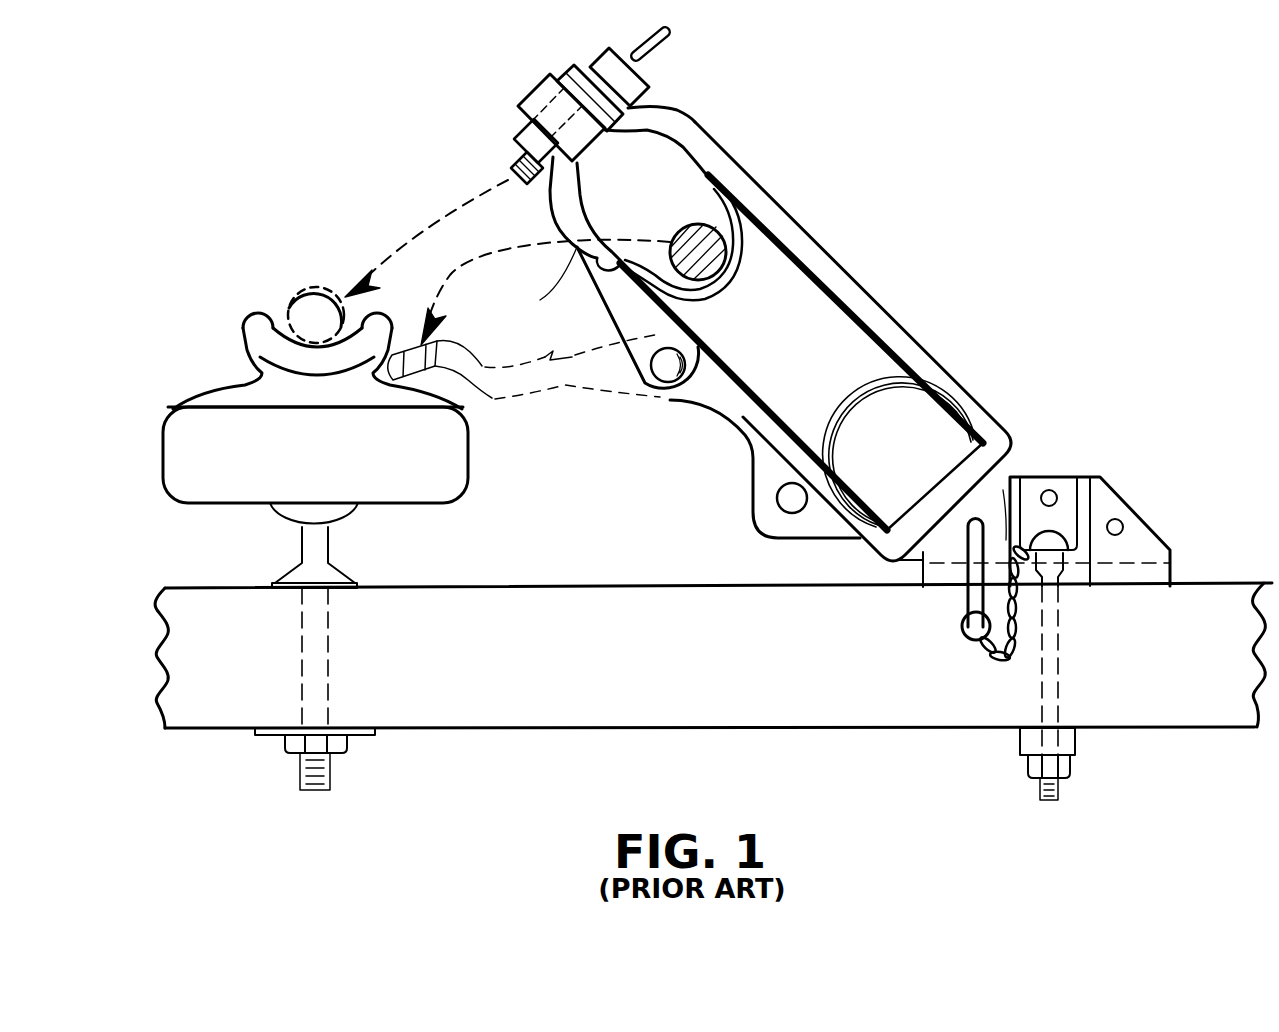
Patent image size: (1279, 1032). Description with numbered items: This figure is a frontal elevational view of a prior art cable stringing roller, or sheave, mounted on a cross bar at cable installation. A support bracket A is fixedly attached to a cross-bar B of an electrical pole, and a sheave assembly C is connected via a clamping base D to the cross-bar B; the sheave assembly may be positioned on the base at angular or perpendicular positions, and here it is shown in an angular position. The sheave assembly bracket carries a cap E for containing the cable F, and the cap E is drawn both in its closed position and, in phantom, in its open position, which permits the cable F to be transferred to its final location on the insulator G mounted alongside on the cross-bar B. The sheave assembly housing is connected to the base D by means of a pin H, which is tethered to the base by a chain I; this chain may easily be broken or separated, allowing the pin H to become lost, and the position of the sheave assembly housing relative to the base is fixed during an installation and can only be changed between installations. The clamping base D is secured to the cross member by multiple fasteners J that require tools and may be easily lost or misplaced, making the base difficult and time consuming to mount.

The support bracket A is at (748, 416).
The cross-bar B is at (498, 668).
The sheave assembly C is at (782, 320).
The clamping base D is at (1133, 547).
The cap E is at (572, 363).
The cable F is at (293, 298).
The insulator G is at (203, 437).
The pin H is at (878, 308).
The chain I is at (988, 647).
The fasteners J is at (1070, 766).